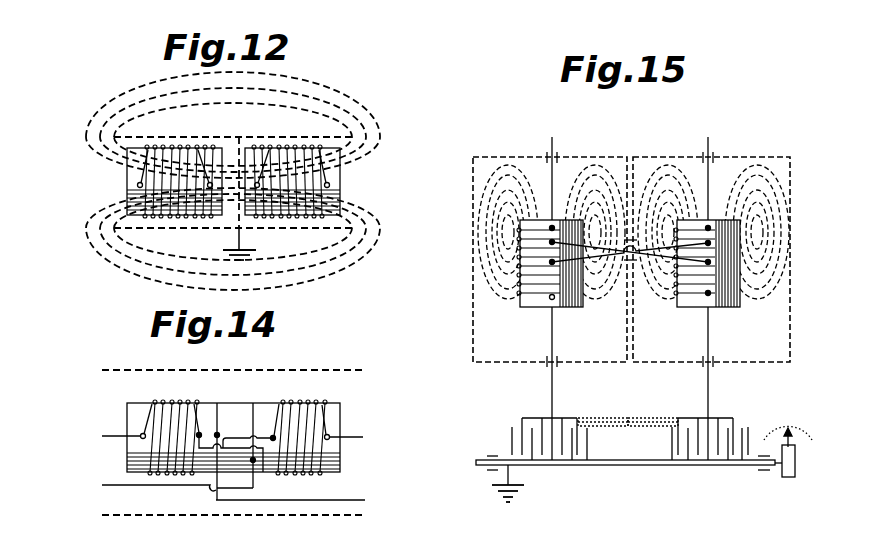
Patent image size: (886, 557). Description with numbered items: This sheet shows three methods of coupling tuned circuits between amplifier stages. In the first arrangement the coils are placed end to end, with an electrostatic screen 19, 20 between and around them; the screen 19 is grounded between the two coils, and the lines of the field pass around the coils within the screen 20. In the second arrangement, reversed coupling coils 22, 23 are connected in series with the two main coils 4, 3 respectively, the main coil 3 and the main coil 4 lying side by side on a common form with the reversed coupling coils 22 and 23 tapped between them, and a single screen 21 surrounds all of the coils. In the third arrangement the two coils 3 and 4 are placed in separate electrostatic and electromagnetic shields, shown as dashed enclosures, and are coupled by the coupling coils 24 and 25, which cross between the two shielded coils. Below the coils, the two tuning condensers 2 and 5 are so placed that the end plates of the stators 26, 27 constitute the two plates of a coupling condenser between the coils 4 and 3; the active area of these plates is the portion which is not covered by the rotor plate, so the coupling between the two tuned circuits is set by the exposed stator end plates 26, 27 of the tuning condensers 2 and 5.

In FIG. 15, the tuning condenser 2 is at (521, 423).
In FIG. 14, the main coil 3 is at (153, 403).
In FIG. 15, the main coil 3 is at (537, 302).
In FIG. 14, the main coil 4 is at (326, 404).
In FIG. 15, the main coil 4 is at (722, 302).
In FIG. 15, the tuning condenser 5 is at (737, 425).
In FIG. 12, the electrostatic screen 19 is at (240, 148).
In FIG. 12, the electrostatic screen 20 is at (298, 138).
In FIG. 14, the screen 21 is at (322, 514).
In FIG. 14, the reversed coupling coil 22 is at (219, 407).
In FIG. 14, the reversed coupling coil 23 is at (256, 407).
In FIG. 15, the coupling coil 24 is at (552, 242).
In FIG. 15, the coupling coil 25 is at (708, 243).
In FIG. 15, the stator end plate 26 is at (579, 420).
In FIG. 15, the stator end plate 27 is at (698, 420).